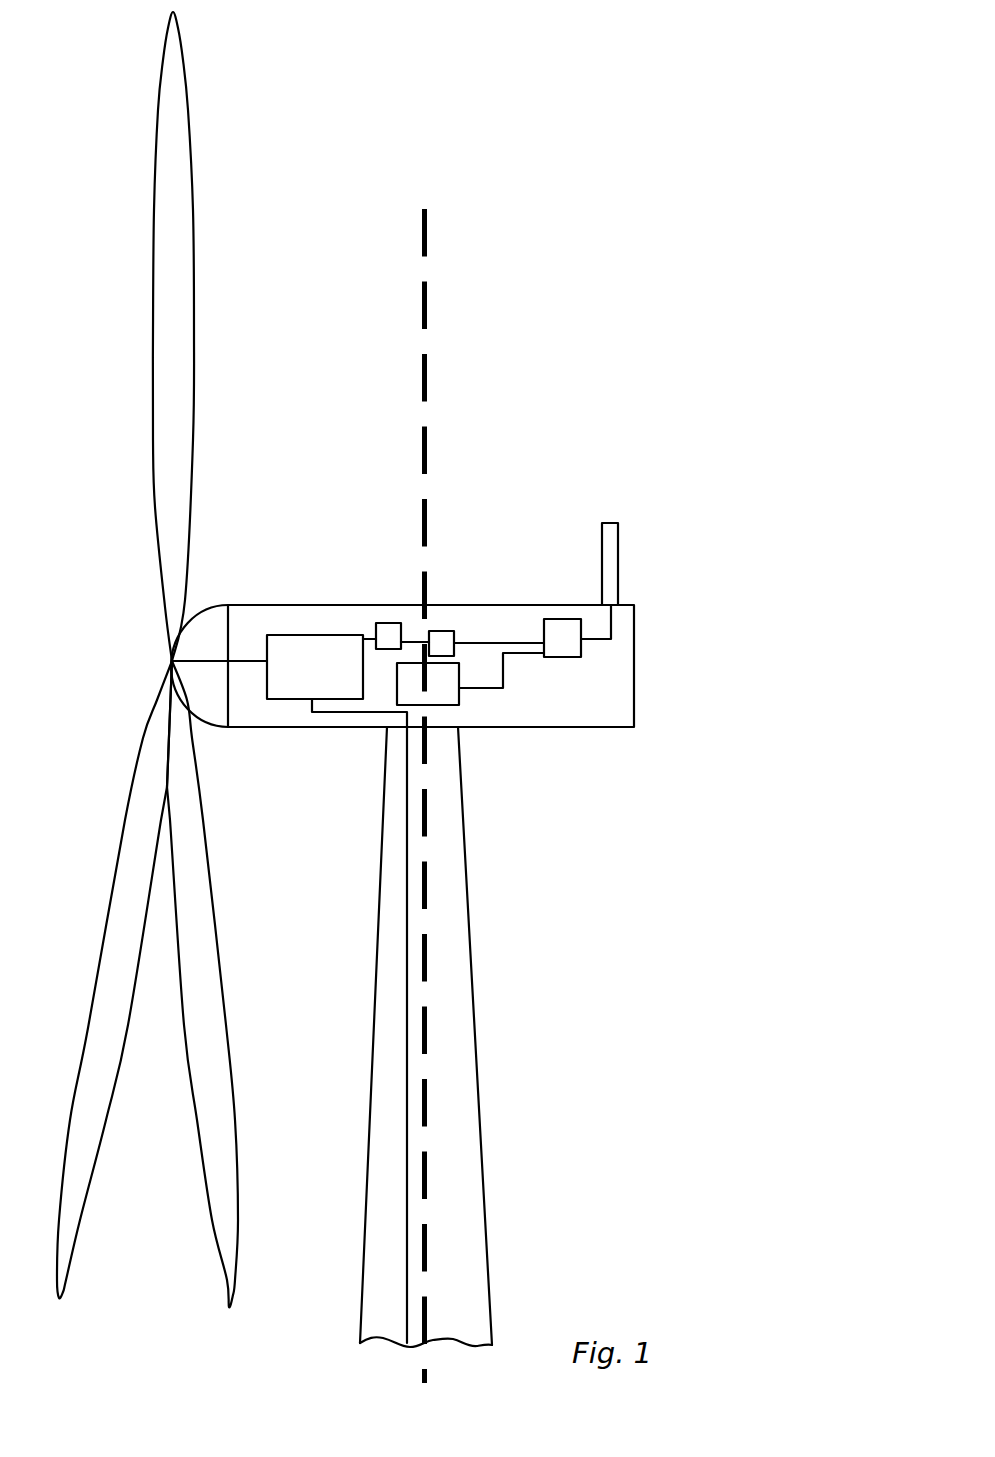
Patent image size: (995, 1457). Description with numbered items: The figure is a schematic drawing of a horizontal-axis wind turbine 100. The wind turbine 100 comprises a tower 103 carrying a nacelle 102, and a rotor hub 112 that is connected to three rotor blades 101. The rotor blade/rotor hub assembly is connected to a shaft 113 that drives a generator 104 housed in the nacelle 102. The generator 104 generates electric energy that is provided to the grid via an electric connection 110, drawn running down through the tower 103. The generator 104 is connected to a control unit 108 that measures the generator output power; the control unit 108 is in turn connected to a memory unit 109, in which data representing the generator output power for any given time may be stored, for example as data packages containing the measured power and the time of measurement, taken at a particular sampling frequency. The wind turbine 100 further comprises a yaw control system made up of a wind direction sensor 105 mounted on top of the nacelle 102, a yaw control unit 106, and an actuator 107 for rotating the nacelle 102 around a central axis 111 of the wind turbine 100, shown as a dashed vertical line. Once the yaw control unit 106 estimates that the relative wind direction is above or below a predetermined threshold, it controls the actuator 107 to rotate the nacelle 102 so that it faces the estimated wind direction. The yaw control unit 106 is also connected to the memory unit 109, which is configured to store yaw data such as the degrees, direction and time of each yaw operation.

The wind turbine 100 is at (693, 434).
The rotor blades 101 is at (123, 659).
The nacelle 102 is at (471, 666).
The tower 103 is at (392, 1037).
The generator 104 is at (308, 630).
The wind direction sensor 105 is at (567, 564).
The yaw control unit 106 is at (537, 599).
The actuator 107 is at (479, 704).
The control unit 108 is at (368, 601).
The memory unit 109 is at (458, 600).
The electric connection 110 is at (354, 1021).
The central axis 111 is at (372, 796).
The rotor hub 112 is at (221, 627).
The shaft 113 is at (251, 708).